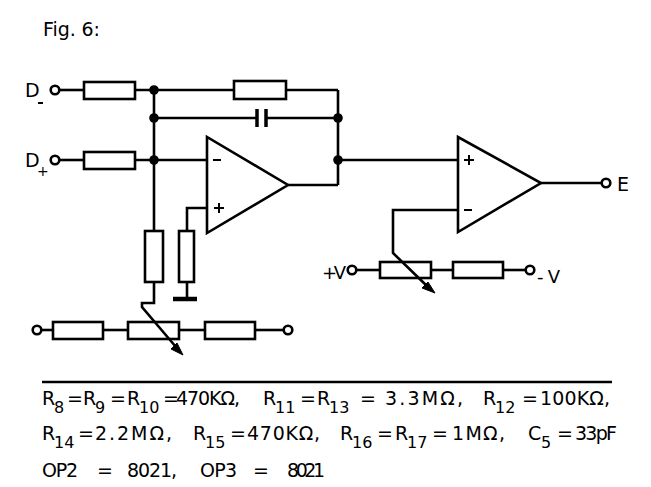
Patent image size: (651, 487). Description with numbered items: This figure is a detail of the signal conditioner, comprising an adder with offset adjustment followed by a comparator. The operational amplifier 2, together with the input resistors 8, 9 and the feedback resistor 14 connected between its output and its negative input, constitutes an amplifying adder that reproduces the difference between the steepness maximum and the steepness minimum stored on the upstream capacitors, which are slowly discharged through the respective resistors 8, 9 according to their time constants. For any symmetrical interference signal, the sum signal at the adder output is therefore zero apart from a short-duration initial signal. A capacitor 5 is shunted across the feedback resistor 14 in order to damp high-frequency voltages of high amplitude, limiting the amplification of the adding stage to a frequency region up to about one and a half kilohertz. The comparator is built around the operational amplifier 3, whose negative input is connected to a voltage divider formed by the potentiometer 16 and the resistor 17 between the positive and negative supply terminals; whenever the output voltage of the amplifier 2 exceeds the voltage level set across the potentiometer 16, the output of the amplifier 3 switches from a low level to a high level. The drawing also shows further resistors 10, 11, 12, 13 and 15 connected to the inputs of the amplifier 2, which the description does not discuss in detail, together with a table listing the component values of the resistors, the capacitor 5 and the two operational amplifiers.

The resistor R8 8 is at (109, 75).
The resistor R9 9 is at (109, 146).
The resistor R10 10 is at (133, 256).
The resistor R11 11 is at (81, 347).
The potentiometer R12 12 is at (153, 347).
The resistor R13 13 is at (231, 347).
The feedback resistor R14 14 is at (260, 75).
The resistor R15 15 is at (206, 256).
The potentiometer R16 16 is at (405, 290).
The resistor R17 17 is at (478, 290).
The capacitor C5 5 is at (264, 134).
The operational amplifier OP2 2 is at (247, 185).
The operational amplifier OP3 3 is at (499, 184).